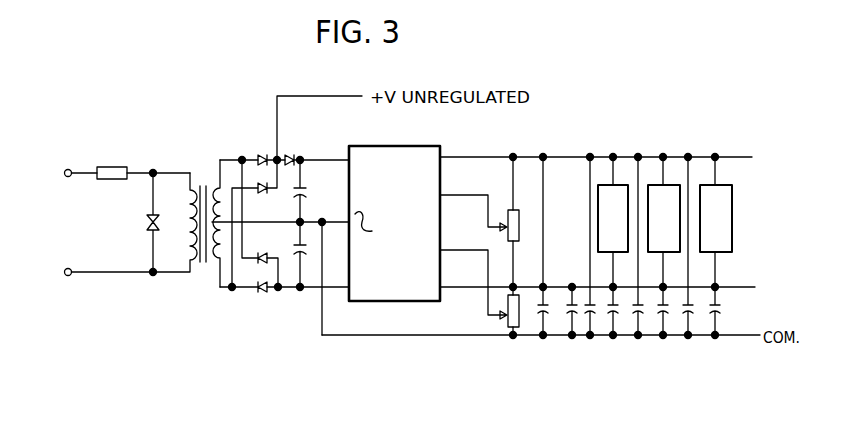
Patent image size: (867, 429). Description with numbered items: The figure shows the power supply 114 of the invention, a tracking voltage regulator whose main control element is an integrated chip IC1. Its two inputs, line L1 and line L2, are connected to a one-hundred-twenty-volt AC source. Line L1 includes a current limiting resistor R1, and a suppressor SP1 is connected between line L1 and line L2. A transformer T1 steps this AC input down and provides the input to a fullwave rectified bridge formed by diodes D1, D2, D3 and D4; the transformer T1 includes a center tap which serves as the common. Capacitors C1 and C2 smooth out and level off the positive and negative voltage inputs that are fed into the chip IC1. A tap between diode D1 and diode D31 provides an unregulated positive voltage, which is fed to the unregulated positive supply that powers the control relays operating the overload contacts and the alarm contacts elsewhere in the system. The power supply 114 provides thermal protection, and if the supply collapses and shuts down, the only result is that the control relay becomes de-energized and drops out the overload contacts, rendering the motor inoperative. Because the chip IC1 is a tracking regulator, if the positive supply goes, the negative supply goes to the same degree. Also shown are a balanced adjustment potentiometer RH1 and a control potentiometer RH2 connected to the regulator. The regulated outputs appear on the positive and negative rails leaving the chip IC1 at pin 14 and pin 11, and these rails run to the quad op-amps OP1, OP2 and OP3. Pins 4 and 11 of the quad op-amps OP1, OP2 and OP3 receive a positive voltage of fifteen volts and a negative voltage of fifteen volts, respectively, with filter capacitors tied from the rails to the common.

The input line L1 is at (70, 174).
The input line L2 is at (98, 273).
The current limiting resistor R1 is at (108, 167).
The suppressor SP1 is at (101, 223).
The transformer T1 is at (208, 262).
The diode D1 is at (261, 156).
The diode D2 is at (262, 192).
The diode D3 is at (260, 262).
The diode D4 is at (262, 291).
The diode D31 is at (288, 156).
The capacitor C1 is at (303, 190).
The capacitor C2 is at (296, 247).
The integrated chip IC1 is at (394, 223).
The power supply 114 is at (510, 129).
The pin 14 is at (608, 153).
The pin 11 is at (608, 279).
The balanced adjustment potentiometer RH1 is at (511, 210).
The control potentiometer RH2 is at (507, 318).
The pin 4 is at (656, 171).
The quad op-amp OP1 is at (613, 260).
The quad op-amp OP2 is at (664, 260).
The quad op-amp OP3 is at (716, 260).